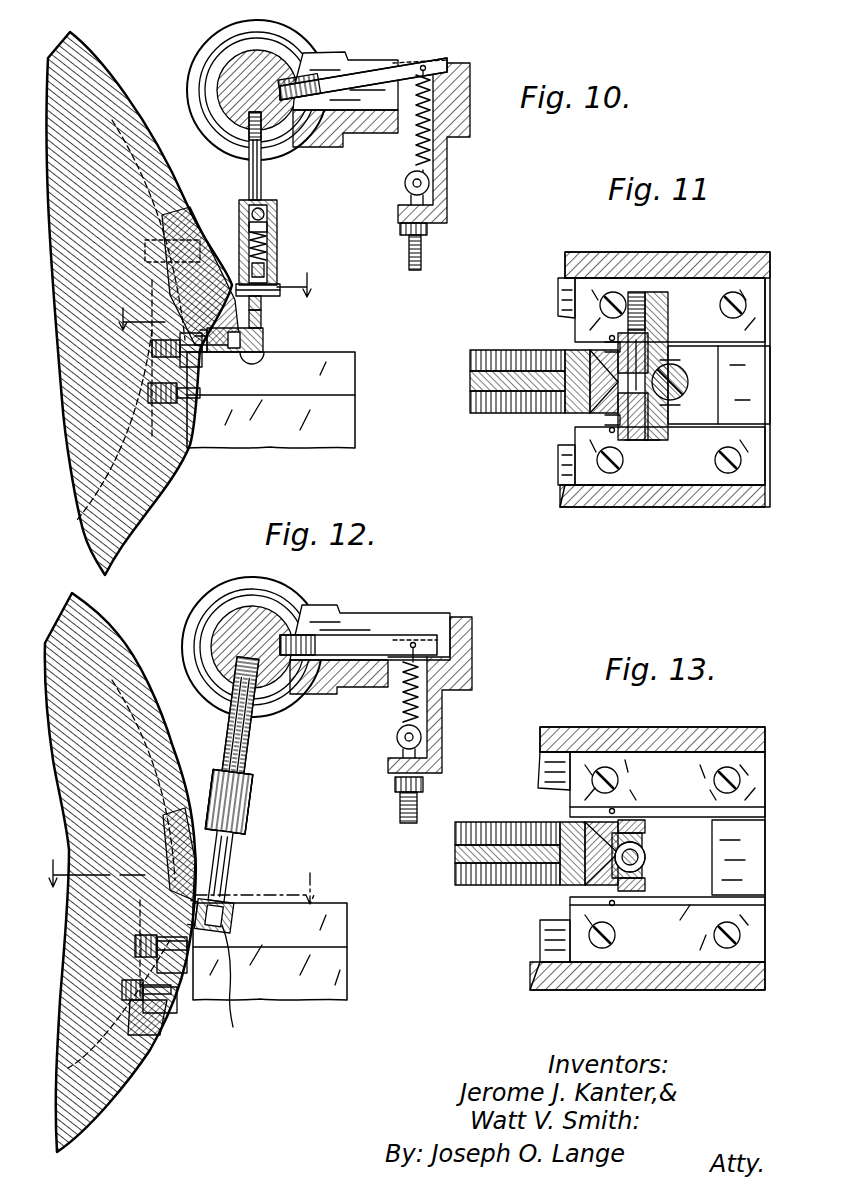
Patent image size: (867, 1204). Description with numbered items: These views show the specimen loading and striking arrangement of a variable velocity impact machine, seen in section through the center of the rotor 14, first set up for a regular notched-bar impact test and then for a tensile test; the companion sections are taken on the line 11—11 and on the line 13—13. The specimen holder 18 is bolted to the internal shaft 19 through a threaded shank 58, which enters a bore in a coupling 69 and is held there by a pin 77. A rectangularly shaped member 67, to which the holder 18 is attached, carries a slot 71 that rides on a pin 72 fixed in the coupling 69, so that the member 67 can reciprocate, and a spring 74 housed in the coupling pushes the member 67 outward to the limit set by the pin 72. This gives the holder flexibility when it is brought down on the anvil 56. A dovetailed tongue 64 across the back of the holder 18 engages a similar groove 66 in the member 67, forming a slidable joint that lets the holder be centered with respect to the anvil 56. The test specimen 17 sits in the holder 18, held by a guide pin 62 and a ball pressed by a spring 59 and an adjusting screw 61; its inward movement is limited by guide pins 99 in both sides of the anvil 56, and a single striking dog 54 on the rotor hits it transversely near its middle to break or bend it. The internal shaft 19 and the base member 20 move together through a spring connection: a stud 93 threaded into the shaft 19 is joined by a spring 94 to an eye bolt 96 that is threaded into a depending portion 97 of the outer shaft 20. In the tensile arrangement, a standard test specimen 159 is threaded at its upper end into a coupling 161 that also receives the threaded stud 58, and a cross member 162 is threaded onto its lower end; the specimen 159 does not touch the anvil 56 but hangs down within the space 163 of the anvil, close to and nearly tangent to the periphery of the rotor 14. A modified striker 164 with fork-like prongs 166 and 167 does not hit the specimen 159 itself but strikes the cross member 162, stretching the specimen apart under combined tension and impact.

In FIG. 10, the rotor 14 is at (82, 62).
In FIG. 11, the rotor 14 is at (492, 356).
In FIG. 12, the rotor 14 is at (93, 632).
In FIG. 13, the rotor 14 is at (492, 863).
In FIG. 10, the internal shaft 19 is at (228, 72).
In FIG. 12, the internal shaft 19 is at (218, 620).
In FIG. 10, the base member 20 is at (296, 46).
In FIG. 12, the base member 20 is at (290, 597).
In FIG. 10, the stud 93 is at (372, 72).
In FIG. 12, the stud 93 is at (387, 643).
In FIG. 10, the spring 94 is at (435, 100).
In FIG. 12, the spring 94 is at (413, 690).
In FIG. 10, the eye bolt 96 is at (404, 186).
In FIG. 12, the eye bolt 96 is at (397, 740).
In FIG. 10, the depending portion 97 is at (448, 216).
In FIG. 12, the depending portion 97 is at (423, 777).
In FIG. 10, the threaded shank 58 is at (245, 132).
In FIG. 12, the threaded shank 58 is at (172, 708).
In FIG. 10, the striking dog 54 is at (230, 300).
In FIG. 11, the striking dog 54 is at (615, 382).
In FIG. 10, the pin 77 is at (264, 215).
In FIG. 10, the coupling 69 is at (276, 240).
In FIG. 11, the coupling 69 is at (680, 376).
In FIG. 10, the spring 74 is at (273, 258).
In FIG. 10, the pin 72 is at (268, 280).
In FIG. 11, the pin 72 is at (683, 387).
In FIG. 10, the slot 71 is at (279, 292).
In FIG. 10, the rectangularly shaped member 67 is at (272, 320).
In FIG. 11, the rectangularly shaped member 67 is at (676, 400).
In FIG. 10, the groove 66 is at (270, 331).
In FIG. 10, the dovetailed tongue 64 is at (264, 345).
In FIG. 10, the specimen holder 18 is at (262, 366).
In FIG. 11, the specimen holder 18 is at (633, 470).
In FIG. 10, the test specimen 17 is at (222, 360).
In FIG. 11, the test specimen 17 is at (580, 358).
In FIG. 10, the anvil 56 is at (322, 368).
In FIG. 11, the anvil 56 is at (760, 328).
In FIG. 12, the anvil 56 is at (335, 920).
In FIG. 13, the anvil 56 is at (750, 798).
In FIG. 10, the guide pins 99 is at (202, 375).
In FIG. 11, the guide pins 99 is at (632, 332).
In FIG. 12, the guide pins 99 is at (154, 974).
In FIG. 13, the guide pins 99 is at (612, 810).
In FIG. 10, the line 11— 11 is at (213, 301).
In FIG. 12, the line 13— 13 is at (181, 877).
In FIG. 11, the spring 59 is at (685, 265).
In FIG. 11, the adjusting screw 61 is at (640, 294).
In FIG. 11, the guide pin 62 is at (648, 372).
In FIG. 12, the coupling 161 is at (264, 806).
In FIG. 12, the test specimen 159 is at (265, 868).
In FIG. 13, the test specimen 159 is at (644, 851).
In FIG. 12, the modified striker 164 is at (259, 919).
In FIG. 12, the cross member 162 is at (233, 1027).
In FIG. 13, the cross member 162 is at (643, 867).
In FIG. 13, the fork-like prong 166 is at (646, 828).
In FIG. 13, the fork-like prong 167 is at (646, 886).
In FIG. 13, the space 163 is at (704, 887).